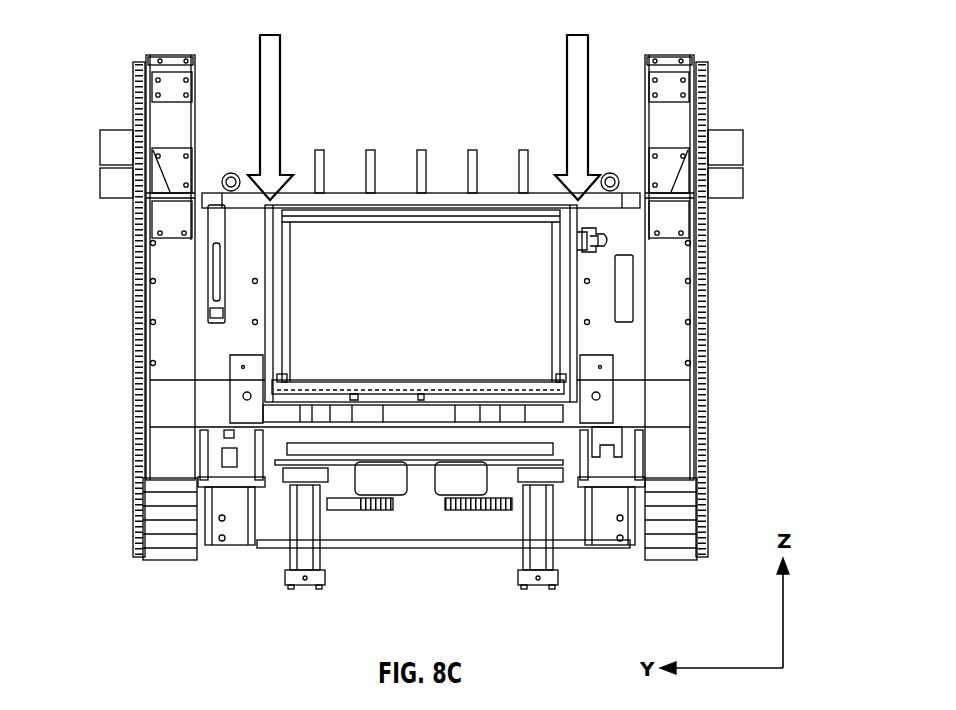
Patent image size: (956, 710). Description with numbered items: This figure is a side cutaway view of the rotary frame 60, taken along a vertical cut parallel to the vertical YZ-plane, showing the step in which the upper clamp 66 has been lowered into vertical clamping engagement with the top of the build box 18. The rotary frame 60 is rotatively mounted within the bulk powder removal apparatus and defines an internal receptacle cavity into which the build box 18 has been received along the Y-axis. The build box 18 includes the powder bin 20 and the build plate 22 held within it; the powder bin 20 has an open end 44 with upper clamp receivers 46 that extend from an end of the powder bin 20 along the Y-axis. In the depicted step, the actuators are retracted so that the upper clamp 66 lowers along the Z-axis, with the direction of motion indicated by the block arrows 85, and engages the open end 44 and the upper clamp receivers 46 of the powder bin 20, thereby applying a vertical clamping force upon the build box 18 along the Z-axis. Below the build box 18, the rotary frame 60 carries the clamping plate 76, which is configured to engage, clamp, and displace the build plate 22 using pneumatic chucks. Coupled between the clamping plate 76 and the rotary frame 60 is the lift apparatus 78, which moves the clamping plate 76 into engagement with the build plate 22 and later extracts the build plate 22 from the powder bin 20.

The block arrows 85 is at (270, 35).
The upper clamp 66 is at (342, 200).
The open end 44 is at (450, 212).
The upper clamp receivers 46 is at (595, 245).
The rotary frame 60 is at (660, 308).
The build box 18 is at (541, 247).
The powder bin 20 is at (541, 247).
The build plate 22 is at (342, 388).
The clamping plate 76 is at (303, 452).
The lift apparatus 78 is at (493, 490).